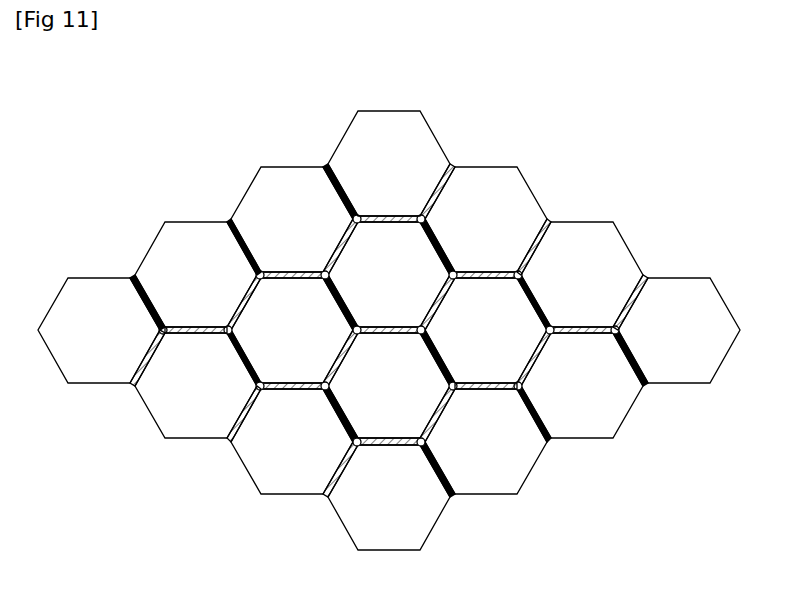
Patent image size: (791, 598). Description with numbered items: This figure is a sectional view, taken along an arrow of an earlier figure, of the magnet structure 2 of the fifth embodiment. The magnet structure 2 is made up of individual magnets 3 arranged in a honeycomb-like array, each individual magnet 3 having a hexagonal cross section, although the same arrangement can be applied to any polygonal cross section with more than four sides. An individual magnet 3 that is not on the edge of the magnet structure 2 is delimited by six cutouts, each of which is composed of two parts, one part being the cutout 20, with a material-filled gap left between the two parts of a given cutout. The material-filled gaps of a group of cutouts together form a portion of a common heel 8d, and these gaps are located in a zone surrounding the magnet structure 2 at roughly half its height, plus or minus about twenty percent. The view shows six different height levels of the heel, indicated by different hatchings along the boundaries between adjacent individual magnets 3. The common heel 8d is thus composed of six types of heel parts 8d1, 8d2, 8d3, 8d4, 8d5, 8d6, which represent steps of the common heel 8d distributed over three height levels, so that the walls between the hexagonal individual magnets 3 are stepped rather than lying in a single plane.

The magnet structure 2 is at (494, 150).
The individual magnet 3 is at (402, 162).
The common heel 8d is at (556, 212).
The heel part 8d1 is at (137, 297).
The heel part 8d2 is at (143, 361).
The heel part 8d3 is at (197, 328).
The heel part 8d4 is at (240, 415).
The heel part 8d5 is at (248, 242).
The heel part 8d6 is at (490, 391).
The cutout 20 is at (635, 302).